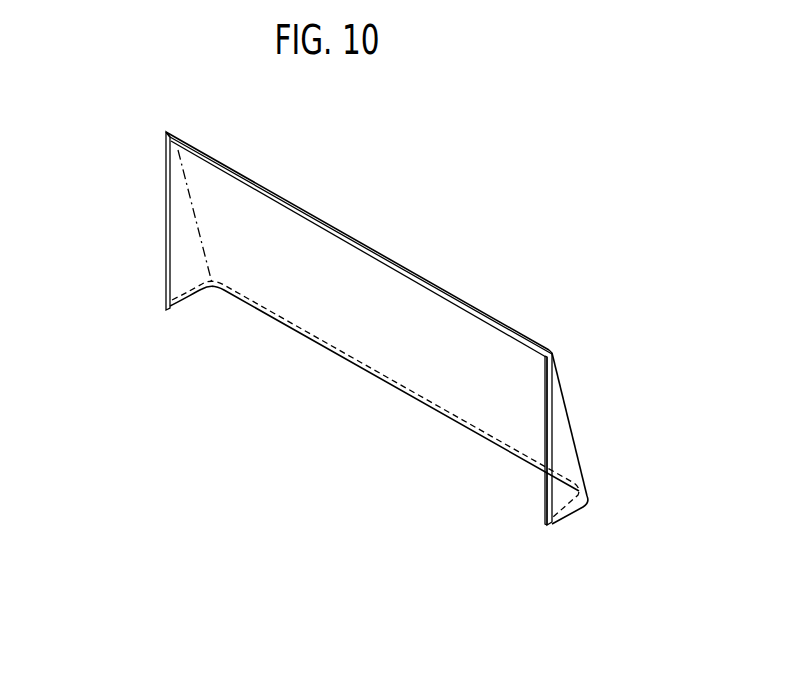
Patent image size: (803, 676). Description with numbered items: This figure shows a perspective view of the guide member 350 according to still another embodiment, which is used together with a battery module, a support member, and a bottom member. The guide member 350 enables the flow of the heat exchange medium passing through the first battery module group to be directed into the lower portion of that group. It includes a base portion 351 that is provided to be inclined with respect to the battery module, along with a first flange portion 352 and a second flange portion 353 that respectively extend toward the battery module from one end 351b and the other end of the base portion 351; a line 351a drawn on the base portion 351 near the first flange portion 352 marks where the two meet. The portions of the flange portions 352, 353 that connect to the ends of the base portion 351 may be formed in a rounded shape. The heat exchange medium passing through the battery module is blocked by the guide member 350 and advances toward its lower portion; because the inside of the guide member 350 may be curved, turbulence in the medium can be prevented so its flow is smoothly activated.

The guide member 350 is at (423, 213).
The base portion 351 is at (378, 350).
The bend line of plate 351a is at (191, 198).
The first flange portion 352 is at (184, 256).
The one end of the base portion 351b is at (575, 437).
The second flange portion 353 is at (558, 488).